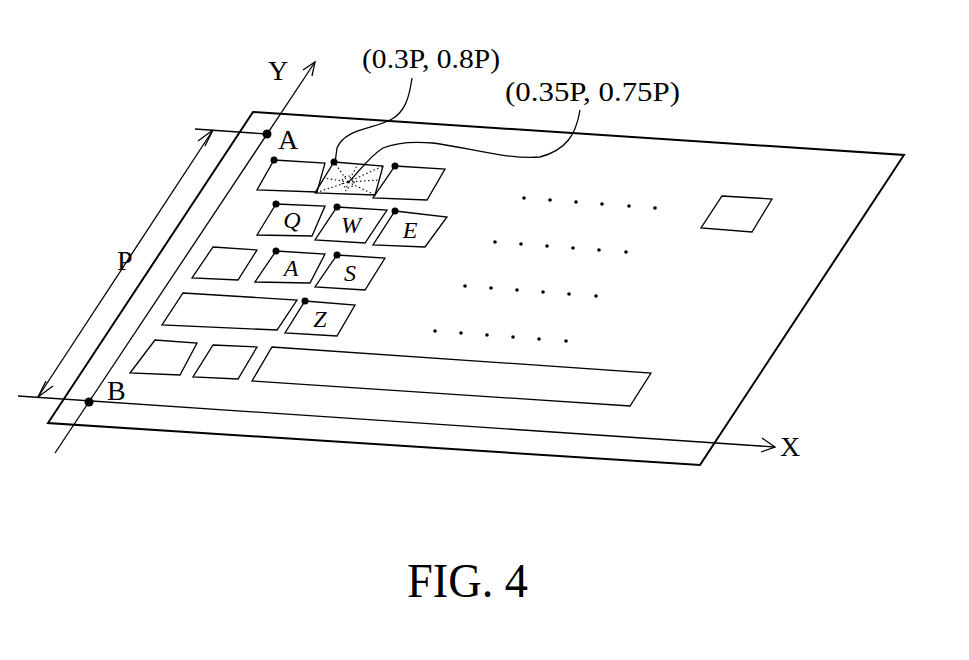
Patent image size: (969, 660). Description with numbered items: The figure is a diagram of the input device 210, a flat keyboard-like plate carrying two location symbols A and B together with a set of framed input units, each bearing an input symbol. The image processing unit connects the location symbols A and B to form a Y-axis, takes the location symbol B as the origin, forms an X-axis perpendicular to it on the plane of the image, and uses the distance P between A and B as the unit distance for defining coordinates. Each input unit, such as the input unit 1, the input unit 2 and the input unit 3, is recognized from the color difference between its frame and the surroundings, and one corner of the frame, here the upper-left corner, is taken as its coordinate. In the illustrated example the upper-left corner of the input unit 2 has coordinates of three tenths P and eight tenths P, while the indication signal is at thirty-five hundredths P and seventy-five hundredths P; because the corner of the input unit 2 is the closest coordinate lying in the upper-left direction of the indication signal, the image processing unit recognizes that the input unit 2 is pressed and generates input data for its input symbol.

The input device 210 is at (708, 400).
The input unit 1 is at (291, 175).
The input unit 2 is at (349, 177).
The input unit 3 is at (409, 182).